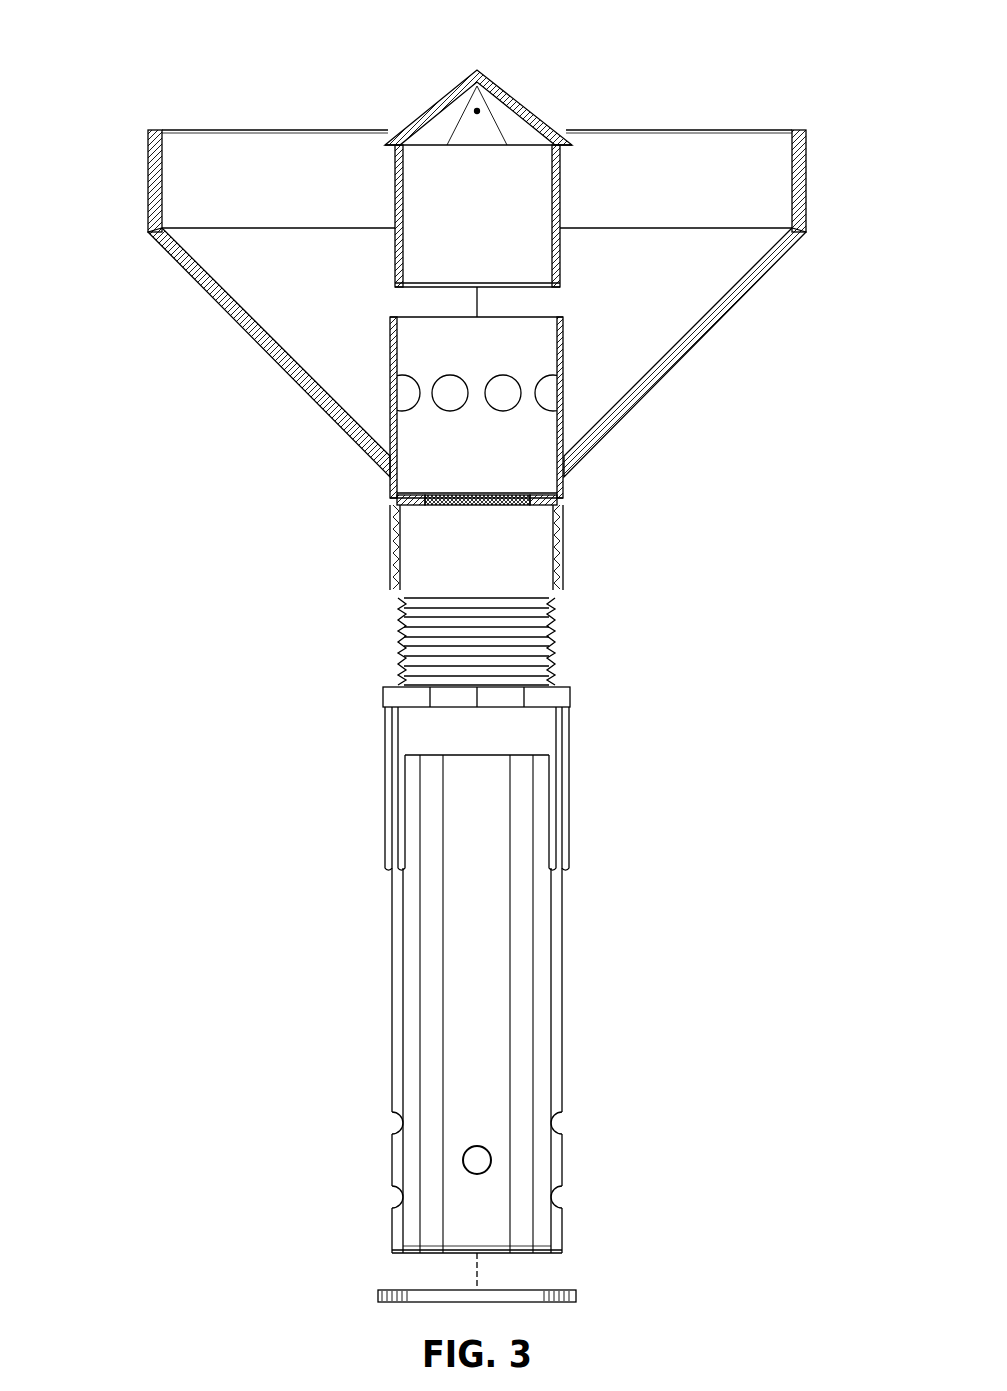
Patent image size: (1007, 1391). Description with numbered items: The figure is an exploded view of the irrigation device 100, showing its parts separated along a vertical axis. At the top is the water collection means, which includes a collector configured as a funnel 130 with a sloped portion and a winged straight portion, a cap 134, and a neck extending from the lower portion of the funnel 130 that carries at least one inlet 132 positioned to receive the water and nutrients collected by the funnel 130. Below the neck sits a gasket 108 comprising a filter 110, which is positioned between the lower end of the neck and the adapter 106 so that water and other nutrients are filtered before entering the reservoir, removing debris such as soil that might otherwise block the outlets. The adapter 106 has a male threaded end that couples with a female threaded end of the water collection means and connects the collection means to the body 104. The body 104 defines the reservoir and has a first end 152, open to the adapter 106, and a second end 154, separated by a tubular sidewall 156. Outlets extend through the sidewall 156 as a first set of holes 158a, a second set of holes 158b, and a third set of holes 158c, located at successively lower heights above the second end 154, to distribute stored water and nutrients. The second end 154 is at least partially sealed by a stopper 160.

The irrigation device 100 is at (124, 68).
The body 104 is at (548, 1018).
The adapter 106 is at (553, 693).
The gasket 108 is at (406, 503).
The filter 110 is at (510, 503).
The funnel 130 is at (292, 209).
The inlet 132 is at (550, 390).
The cap 134 is at (498, 85).
The first end 152 is at (432, 752).
The second end 154 is at (547, 1260).
The tubular sidewall 156 is at (500, 948).
The first set of holes 158a is at (481, 1158).
The second set of holes 158b is at (560, 1125).
The third set of holes 158c is at (560, 1198).
The stopper 160 is at (400, 1295).